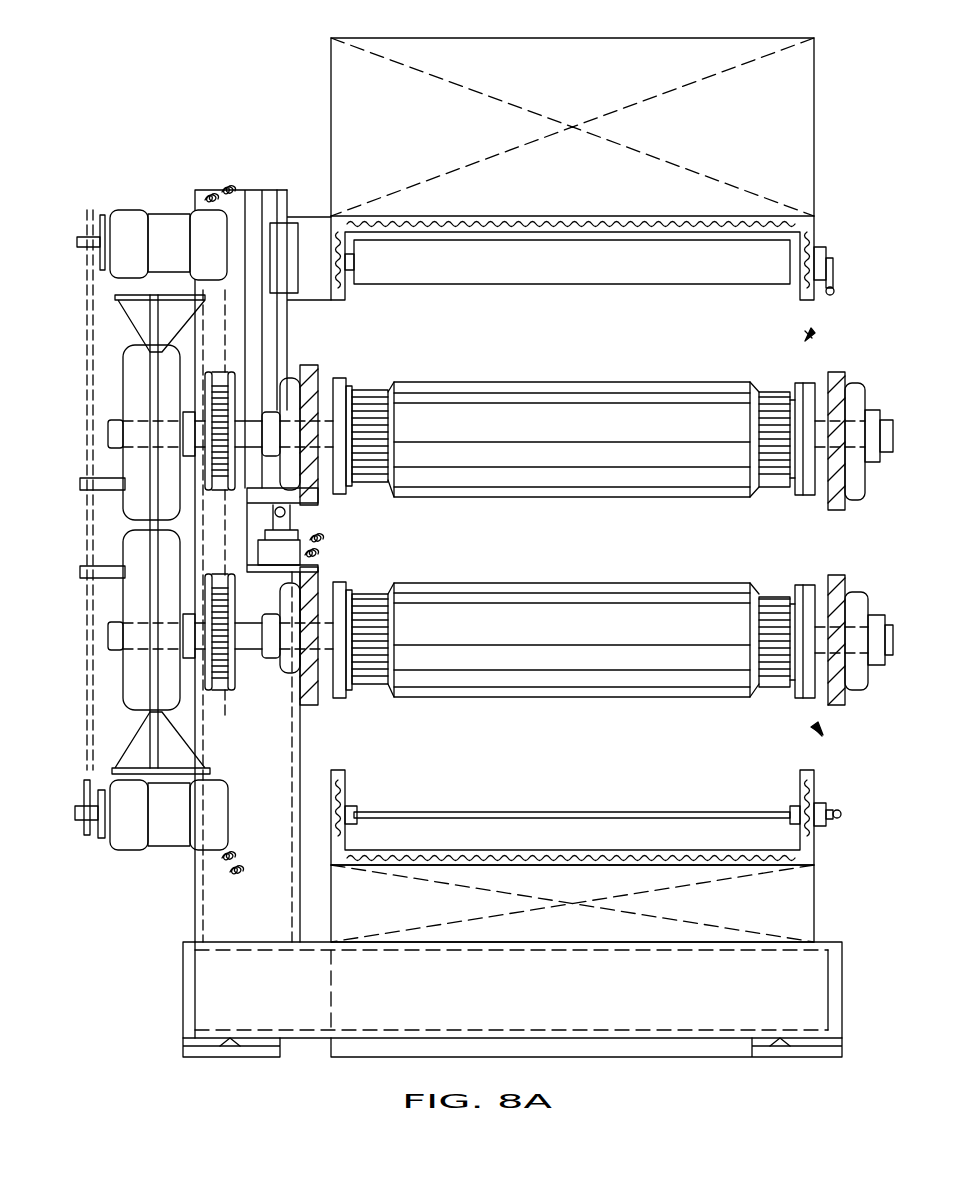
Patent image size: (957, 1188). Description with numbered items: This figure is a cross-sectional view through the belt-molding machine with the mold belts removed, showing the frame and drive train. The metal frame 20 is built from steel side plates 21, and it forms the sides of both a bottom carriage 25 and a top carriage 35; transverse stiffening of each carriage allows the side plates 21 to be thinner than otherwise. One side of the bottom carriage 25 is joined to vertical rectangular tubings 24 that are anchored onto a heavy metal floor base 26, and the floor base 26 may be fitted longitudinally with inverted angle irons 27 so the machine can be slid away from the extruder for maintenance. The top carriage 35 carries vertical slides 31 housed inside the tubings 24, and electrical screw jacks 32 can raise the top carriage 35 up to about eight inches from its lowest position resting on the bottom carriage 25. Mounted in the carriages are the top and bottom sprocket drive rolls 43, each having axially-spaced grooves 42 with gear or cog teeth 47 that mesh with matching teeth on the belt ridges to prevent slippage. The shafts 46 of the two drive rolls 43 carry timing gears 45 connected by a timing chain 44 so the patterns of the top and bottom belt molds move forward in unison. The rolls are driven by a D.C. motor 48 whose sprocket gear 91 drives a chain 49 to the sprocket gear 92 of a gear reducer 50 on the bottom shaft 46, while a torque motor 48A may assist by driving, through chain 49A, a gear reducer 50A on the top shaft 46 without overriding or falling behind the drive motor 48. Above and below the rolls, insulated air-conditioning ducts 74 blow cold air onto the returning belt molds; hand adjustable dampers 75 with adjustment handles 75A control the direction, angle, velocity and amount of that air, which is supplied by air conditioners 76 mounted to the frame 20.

The metal frame 20 is at (842, 512).
The side plates 21 is at (308, 365).
The vertical rectangular tubings 24 is at (250, 192).
The bottom carriage 25 is at (828, 737).
The floor base 26 is at (468, 994).
The inverted angle irons 27 is at (240, 1046).
The vertical slides 31 is at (283, 224).
The electrical screw jacks 32 is at (300, 546).
The top carriage 35 is at (815, 339).
The groove 42 is at (393, 496).
The sprocket drive roll 43 is at (597, 428).
The timing chain 44 is at (80, 505).
The timing gears 45 is at (226, 372).
The shafts 46 is at (120, 430).
The gear or cog teeth 47 is at (372, 401).
The D.C. motor 48 is at (170, 848).
The torque motor 48A is at (165, 218).
The chain 49 is at (95, 755).
The chain 49A is at (95, 330).
The gear reducer 50 is at (127, 680).
The gear reducer 50A is at (125, 386).
The insulated air-conditioning ducts 74 is at (525, 222).
The dampers 75 is at (703, 271).
The adjustment handles 75A is at (832, 274).
The air conditioners 76 is at (690, 45).
The sprocket gear 91 is at (80, 840).
The sprocket gear 92 is at (87, 573).